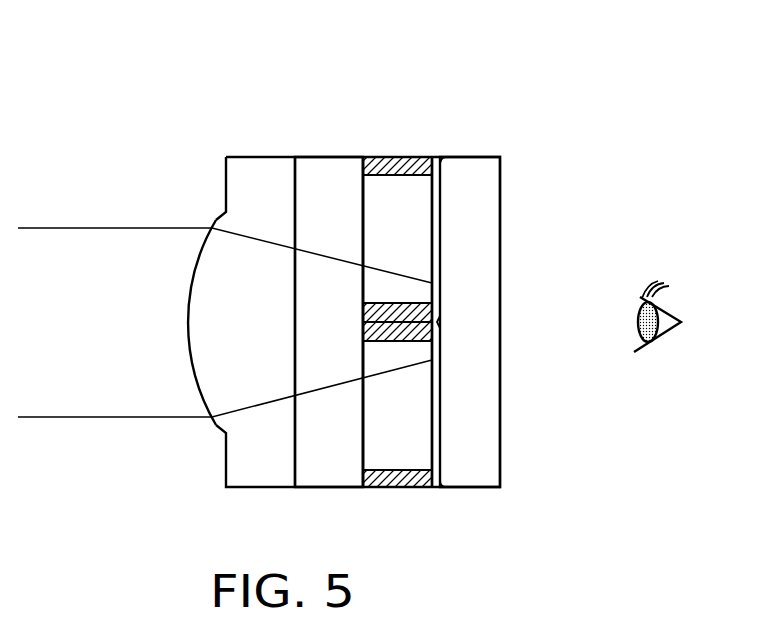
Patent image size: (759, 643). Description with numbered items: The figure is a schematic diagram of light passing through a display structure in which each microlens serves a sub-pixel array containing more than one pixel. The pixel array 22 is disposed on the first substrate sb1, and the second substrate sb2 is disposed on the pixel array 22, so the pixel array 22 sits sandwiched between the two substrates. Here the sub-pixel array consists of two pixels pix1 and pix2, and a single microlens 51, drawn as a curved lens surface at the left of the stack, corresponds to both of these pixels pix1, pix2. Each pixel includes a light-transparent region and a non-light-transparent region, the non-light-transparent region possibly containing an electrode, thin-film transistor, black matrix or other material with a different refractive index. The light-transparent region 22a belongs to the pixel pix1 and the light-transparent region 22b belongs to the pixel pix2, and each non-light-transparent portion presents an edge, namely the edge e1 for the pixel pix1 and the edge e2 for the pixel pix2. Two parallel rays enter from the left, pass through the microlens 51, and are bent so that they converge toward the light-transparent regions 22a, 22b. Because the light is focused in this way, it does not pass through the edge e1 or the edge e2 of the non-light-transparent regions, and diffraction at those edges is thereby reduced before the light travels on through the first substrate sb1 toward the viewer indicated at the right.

The microlens 51 is at (218, 424).
The second substrate sb2 is at (327, 157).
The first substrate sb1 is at (467, 157).
The pixel array 22 is at (398, 155).
The light-transparent region 22a is at (373, 207).
The light-transparent region 22b is at (422, 167).
The edge e1 is at (400, 177).
The edge e2 is at (398, 468).
The pixel pix1 is at (440, 244).
The pixel pix2 is at (440, 407).